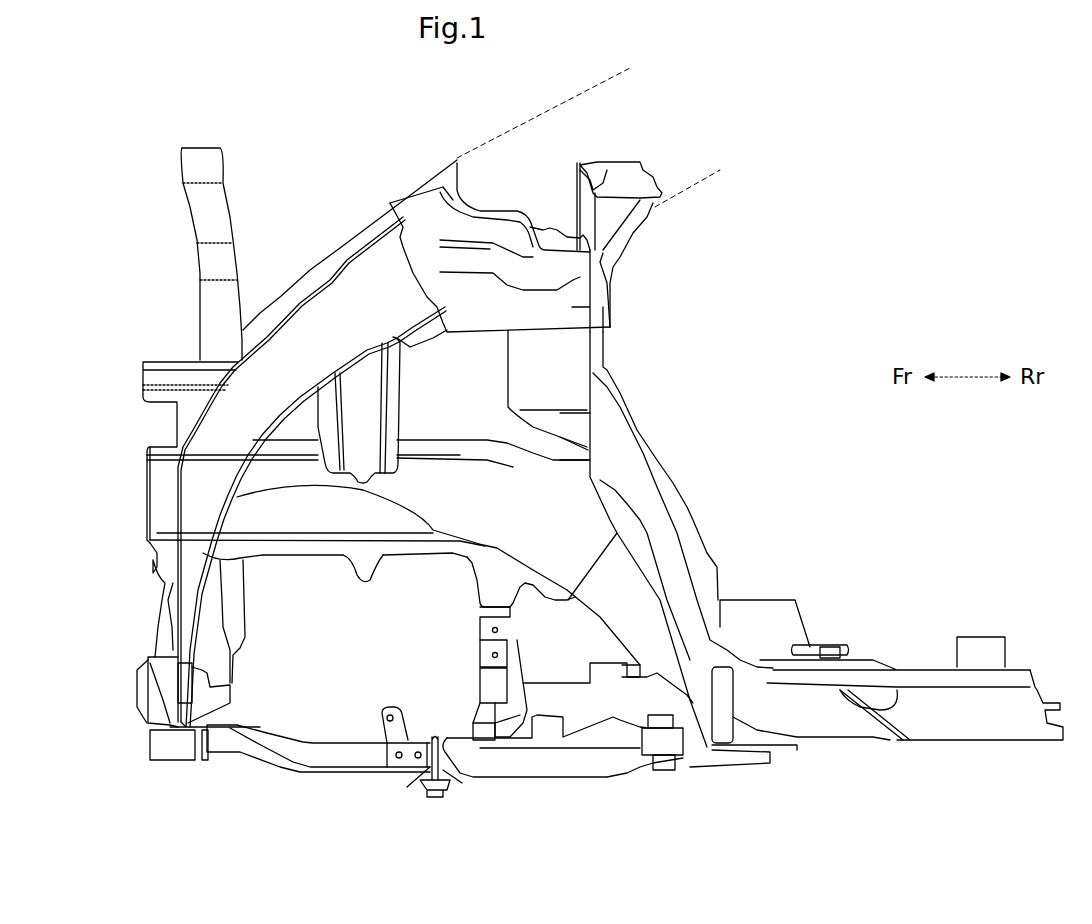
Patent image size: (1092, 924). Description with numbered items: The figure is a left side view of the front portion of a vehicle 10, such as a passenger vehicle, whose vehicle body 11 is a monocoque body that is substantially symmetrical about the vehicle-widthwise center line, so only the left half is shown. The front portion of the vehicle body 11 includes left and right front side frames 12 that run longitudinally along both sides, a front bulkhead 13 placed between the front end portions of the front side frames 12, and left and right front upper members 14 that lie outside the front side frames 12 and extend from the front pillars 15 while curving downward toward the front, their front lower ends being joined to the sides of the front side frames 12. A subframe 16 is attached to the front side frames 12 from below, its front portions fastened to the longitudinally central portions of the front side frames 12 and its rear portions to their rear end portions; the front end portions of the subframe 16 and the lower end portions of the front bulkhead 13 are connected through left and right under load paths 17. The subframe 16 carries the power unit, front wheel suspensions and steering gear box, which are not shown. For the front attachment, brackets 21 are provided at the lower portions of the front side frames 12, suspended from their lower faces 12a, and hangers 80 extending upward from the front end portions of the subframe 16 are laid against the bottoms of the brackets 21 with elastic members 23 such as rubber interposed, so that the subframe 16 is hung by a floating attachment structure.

The vehicle 10 is at (862, 278).
The vehicle body 11 is at (153, 353).
The front side frame 12 is at (303, 525).
The lower face of front side frame 12a is at (390, 567).
The front bulkhead 13 is at (163, 590).
The front upper member 14 is at (362, 285).
The front pillar 15 is at (682, 207).
The subframe 16 is at (548, 762).
The under load path 17 is at (330, 763).
The bracket 21 is at (490, 578).
The elastic member 23 is at (483, 625).
The hanger 80 is at (490, 680).